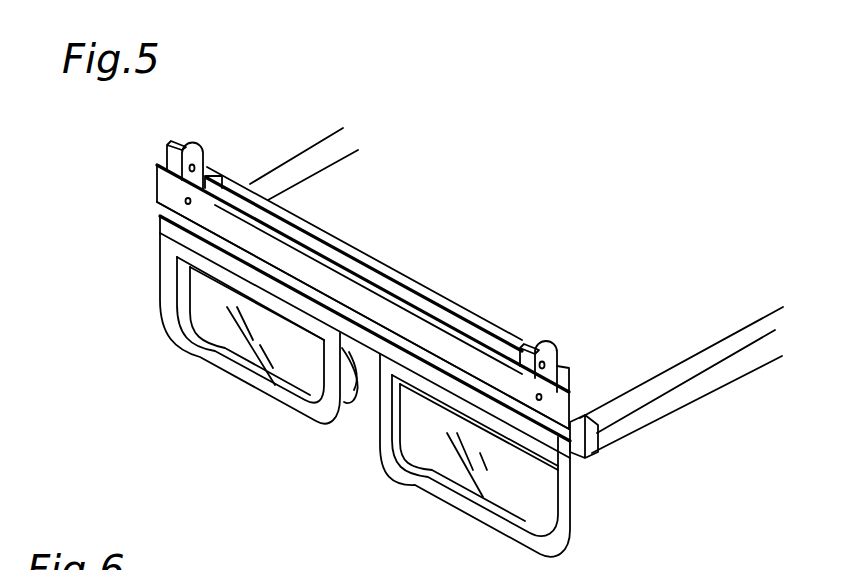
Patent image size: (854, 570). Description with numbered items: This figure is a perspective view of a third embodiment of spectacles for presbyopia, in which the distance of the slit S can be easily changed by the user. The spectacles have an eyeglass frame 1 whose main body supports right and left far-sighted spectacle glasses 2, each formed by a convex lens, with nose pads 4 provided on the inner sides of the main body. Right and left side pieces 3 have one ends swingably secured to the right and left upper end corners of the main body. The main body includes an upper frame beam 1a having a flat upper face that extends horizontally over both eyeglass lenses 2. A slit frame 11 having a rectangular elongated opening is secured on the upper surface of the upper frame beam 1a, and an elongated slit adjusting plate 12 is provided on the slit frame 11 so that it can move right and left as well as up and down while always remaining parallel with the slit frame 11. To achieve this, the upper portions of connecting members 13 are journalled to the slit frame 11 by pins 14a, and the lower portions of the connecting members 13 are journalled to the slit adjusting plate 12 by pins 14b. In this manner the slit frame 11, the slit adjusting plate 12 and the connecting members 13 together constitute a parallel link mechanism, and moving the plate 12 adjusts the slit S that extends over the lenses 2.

The frame 1 is at (180, 337).
The upper frame beam 1a is at (227, 280).
The far-sighted spectacle glasses 2 is at (247, 353).
The side pieces 3 is at (653, 410).
The nose pads 4 is at (350, 393).
The slit frame 11 is at (367, 270).
The slit adjusting plate 12 is at (162, 183).
The connecting members 13 is at (548, 342).
The pins 14a is at (195, 165).
The pins 14b is at (170, 203).
The slit S is at (245, 257).